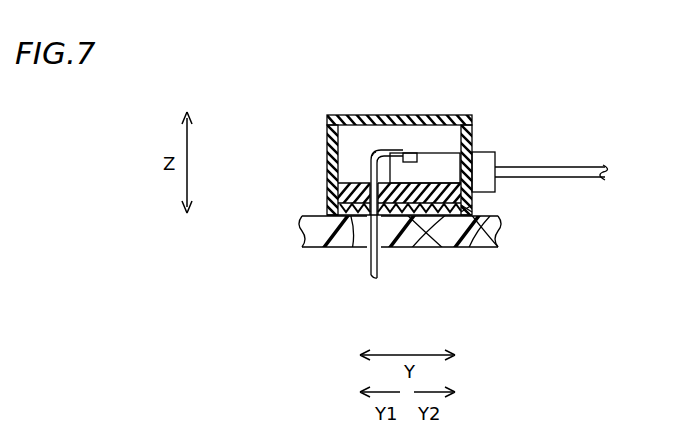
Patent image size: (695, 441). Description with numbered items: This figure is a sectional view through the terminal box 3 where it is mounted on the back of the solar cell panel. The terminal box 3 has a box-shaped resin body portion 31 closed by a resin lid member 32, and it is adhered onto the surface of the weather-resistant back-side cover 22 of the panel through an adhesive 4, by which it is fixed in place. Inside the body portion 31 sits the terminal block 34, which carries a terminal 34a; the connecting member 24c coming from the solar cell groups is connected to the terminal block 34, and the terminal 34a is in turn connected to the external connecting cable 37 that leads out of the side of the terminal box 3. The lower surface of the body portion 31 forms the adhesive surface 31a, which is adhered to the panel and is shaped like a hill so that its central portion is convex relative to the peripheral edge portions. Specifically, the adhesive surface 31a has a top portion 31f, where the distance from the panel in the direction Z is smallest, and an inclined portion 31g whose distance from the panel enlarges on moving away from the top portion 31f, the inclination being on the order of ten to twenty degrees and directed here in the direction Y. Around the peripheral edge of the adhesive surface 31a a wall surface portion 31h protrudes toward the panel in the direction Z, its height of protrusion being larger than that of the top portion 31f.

The terminal box 3 is at (258, 66).
The lid member 32 is at (333, 117).
The body portion 31 is at (427, 229).
The connecting member 24c is at (378, 150).
The terminal 34a is at (410, 152).
The terminal block 34 is at (440, 165).
The external connecting cable 37 is at (570, 172).
The wall surface portion 31h is at (475, 204).
The back-side cover 22 is at (500, 232).
The adhesive 4 is at (368, 203).
The top portion 31f is at (407, 213).
The inclined portion 31g is at (460, 213).
The adhesive surface 31a is at (500, 290).